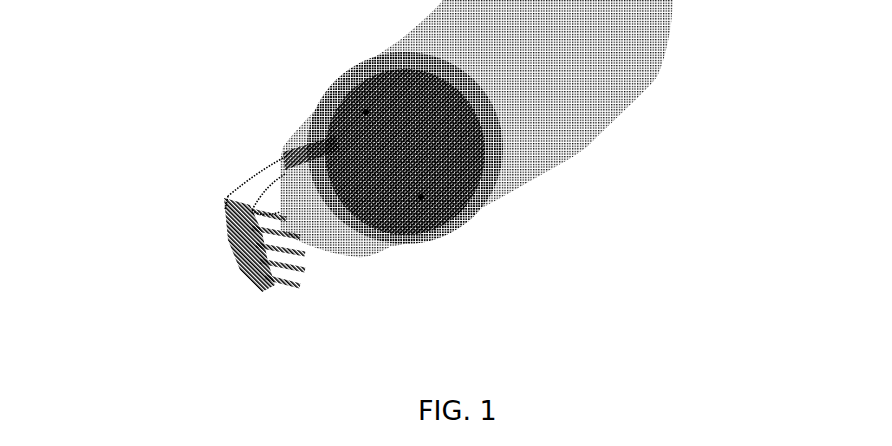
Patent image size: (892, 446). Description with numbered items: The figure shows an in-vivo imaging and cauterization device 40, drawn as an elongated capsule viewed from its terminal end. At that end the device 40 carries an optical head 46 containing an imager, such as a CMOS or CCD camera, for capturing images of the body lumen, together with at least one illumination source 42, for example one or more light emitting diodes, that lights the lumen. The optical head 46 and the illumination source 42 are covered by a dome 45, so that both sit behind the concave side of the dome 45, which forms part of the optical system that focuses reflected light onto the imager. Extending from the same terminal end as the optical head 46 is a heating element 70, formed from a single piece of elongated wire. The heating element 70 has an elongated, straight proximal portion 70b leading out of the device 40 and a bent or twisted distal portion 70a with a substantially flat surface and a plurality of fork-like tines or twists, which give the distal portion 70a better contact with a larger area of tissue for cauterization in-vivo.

The in-vivo imaging and cauterization device 40 is at (632, 136).
The illumination source 42 is at (370, 112).
The dome 45 is at (386, 248).
The optical head 46 is at (365, 180).
The heating element 70 is at (200, 172).
The distal portion 70a is at (222, 212).
The proximal portion 70b is at (283, 155).